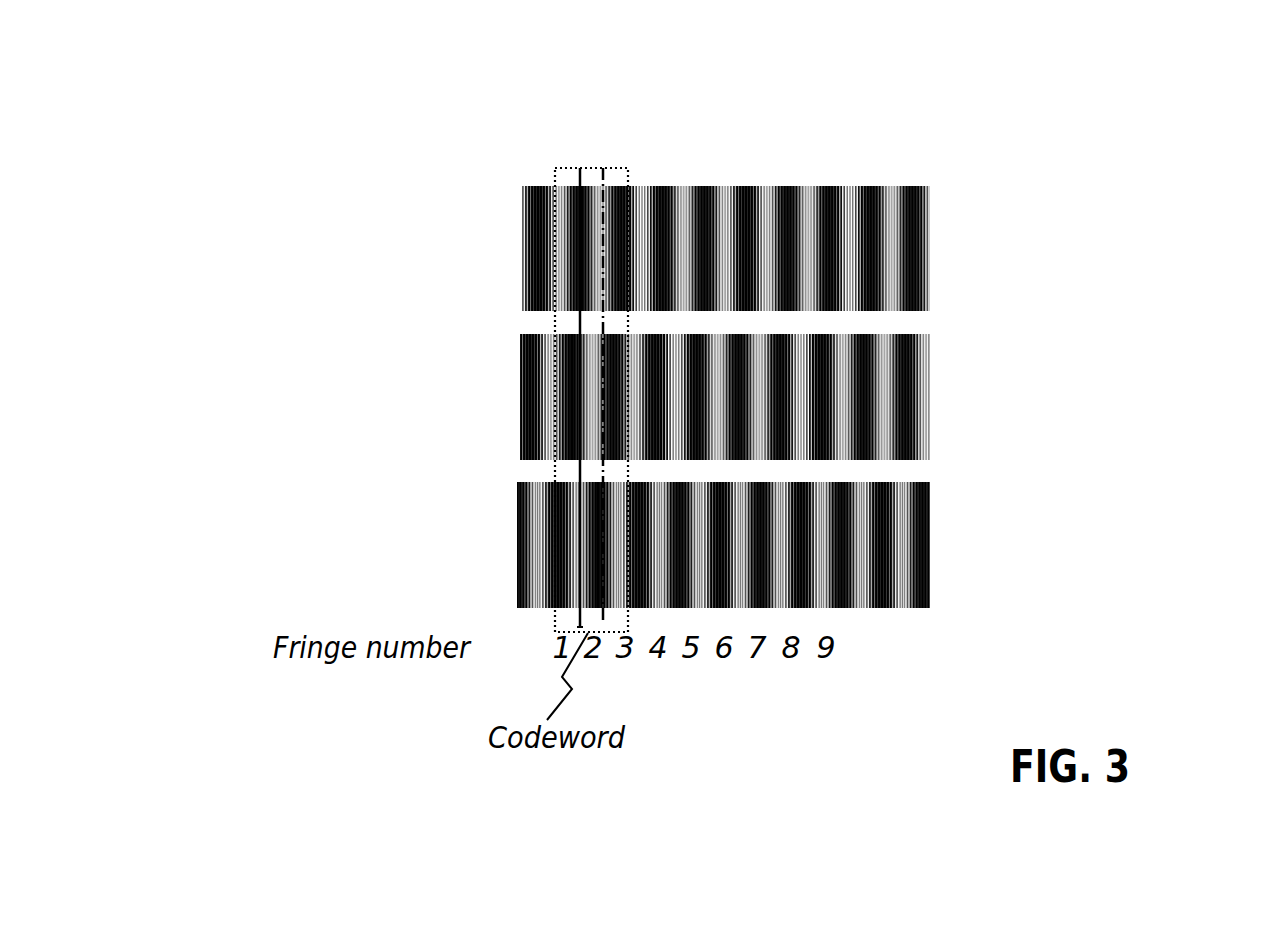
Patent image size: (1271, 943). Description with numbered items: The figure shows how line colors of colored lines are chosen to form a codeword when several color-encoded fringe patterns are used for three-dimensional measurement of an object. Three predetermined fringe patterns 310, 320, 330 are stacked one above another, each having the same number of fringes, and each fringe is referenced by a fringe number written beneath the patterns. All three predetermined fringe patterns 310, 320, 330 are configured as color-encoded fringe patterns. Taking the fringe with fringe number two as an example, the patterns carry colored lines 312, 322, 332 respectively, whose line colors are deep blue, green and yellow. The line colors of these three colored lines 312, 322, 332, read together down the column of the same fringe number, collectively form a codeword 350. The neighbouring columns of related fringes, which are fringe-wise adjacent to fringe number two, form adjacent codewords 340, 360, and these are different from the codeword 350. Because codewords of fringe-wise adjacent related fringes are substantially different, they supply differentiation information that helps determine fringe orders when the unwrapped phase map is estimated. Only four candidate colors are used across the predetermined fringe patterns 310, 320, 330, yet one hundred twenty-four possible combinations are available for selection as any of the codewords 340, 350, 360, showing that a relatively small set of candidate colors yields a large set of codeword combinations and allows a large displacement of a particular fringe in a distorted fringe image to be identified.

The predetermined fringe pattern 310 is at (278, 227).
The predetermined fringe pattern 320 is at (288, 373).
The predetermined fringe pattern 330 is at (290, 522).
The colored line 312 is at (590, 230).
The colored line 322 is at (590, 388).
The colored line 332 is at (600, 540).
The adjacent codeword 340 is at (563, 168).
The codeword 350 is at (593, 167).
The adjacent codeword 360 is at (615, 168).